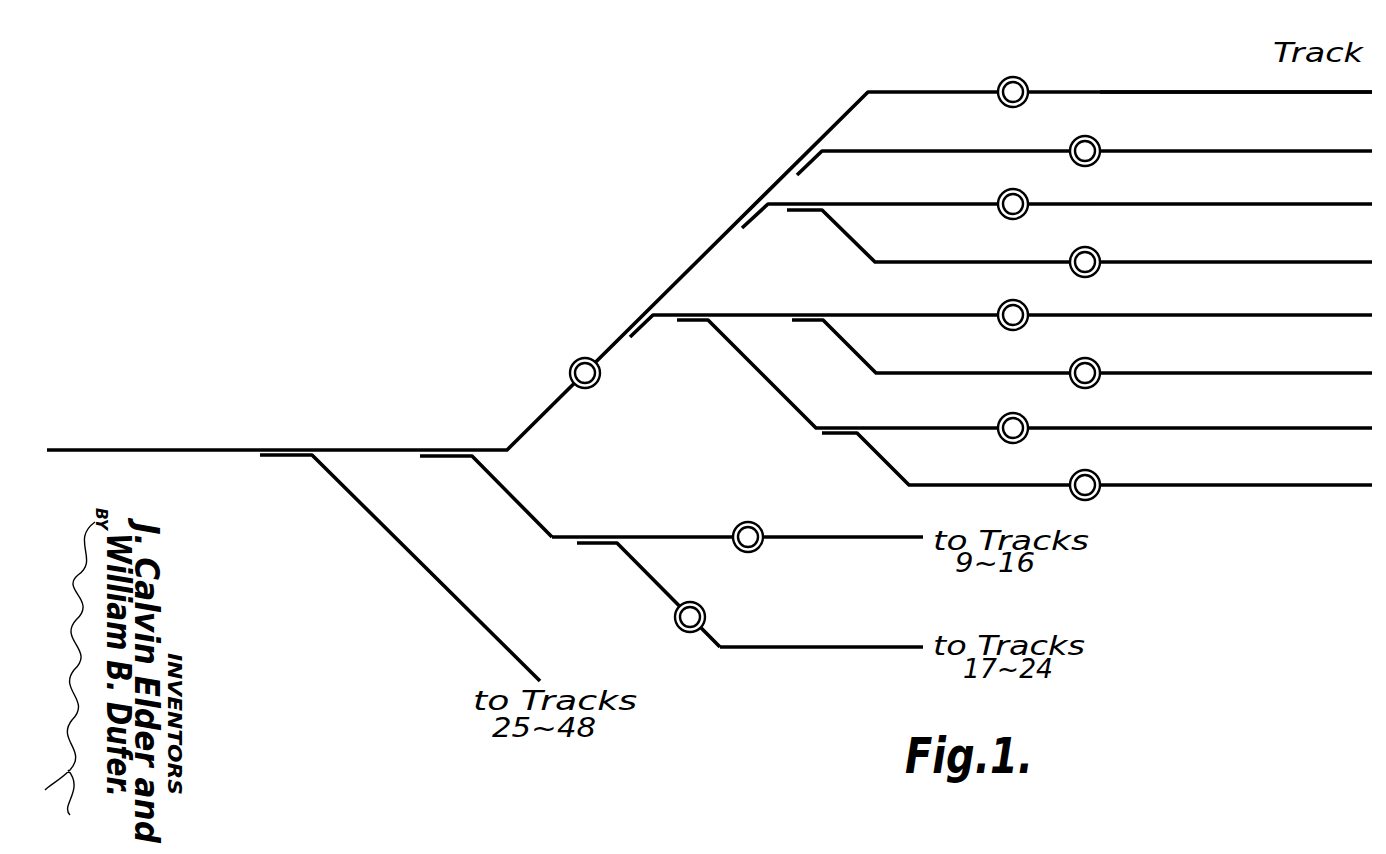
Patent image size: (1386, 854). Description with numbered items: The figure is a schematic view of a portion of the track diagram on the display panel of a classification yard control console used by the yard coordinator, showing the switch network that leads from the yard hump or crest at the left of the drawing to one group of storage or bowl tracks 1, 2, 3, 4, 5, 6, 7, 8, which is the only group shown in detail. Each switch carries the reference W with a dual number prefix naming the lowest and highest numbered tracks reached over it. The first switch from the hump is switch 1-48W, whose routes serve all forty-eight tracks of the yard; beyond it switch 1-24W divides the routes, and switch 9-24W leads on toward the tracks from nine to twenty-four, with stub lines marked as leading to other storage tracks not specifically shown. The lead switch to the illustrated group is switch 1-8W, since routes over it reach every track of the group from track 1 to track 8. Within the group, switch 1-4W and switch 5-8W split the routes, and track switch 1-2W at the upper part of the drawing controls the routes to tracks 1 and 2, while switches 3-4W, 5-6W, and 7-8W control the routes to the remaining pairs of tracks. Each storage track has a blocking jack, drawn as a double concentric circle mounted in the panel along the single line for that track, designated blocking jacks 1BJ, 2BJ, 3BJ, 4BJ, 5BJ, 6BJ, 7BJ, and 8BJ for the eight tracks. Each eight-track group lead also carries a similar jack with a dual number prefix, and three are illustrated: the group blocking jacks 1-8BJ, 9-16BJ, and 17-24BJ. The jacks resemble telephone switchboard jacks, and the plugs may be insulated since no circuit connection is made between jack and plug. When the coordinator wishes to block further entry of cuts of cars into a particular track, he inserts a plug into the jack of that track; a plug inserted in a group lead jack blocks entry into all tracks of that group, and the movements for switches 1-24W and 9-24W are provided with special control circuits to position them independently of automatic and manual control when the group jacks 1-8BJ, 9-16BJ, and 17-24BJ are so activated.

The storage track 1 is at (1236, 79).
The storage track 2 is at (1236, 137).
The storage track 3 is at (1236, 191).
The storage track 4 is at (1236, 247).
The storage track 5 is at (1236, 301).
The storage track 6 is at (1236, 359).
The storage track 7 is at (1236, 414).
The storage track 8 is at (1236, 471).
The track switch 1-48W is at (285, 450).
The track switch 1-24W is at (443, 450).
The lead switch 1-8W is at (636, 318).
The track switch 1-4W is at (741, 219).
The track switch 1-2W is at (793, 167).
The track switch 3-4W is at (806, 204).
The track switch 5-8W is at (697, 314).
The track switch 5-6W is at (802, 314).
The track switch 7-8W is at (848, 418).
The track switch 9-24W is at (586, 537).
The group blocking jack 1-8BJ is at (569, 373).
The group blocking jack 9-16BJ is at (753, 522).
The group blocking jack 17-24BJ is at (701, 604).
The blocking jack 1BJ is at (1007, 77).
The blocking jack 2BJ is at (1082, 137).
The blocking jack 3BJ is at (1040, 180).
The blocking jack 4BJ is at (1083, 248).
The blocking jack 5BJ is at (1038, 290).
The blocking jack 6BJ is at (1086, 360).
The blocking jack 7BJ is at (1010, 415).
The blocking jack 8BJ is at (1088, 472).